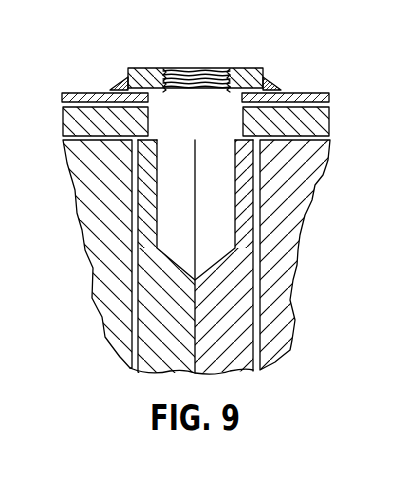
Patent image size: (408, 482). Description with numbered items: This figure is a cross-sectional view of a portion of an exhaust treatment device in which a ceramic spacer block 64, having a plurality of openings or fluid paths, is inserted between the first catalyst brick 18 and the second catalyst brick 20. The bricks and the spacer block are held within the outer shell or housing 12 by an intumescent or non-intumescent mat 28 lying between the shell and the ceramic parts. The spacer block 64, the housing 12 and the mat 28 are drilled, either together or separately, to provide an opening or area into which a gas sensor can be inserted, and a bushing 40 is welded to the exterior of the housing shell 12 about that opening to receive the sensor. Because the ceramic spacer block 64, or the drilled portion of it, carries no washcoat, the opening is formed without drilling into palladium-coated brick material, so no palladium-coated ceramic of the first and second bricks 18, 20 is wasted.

The outer shell 12 is at (92, 98).
The first catalyst brick 18 is at (107, 258).
The second catalyst brick 20 is at (275, 267).
The intumescent or non-intumescent mat 28 is at (87, 118).
The bushing 40 is at (258, 64).
The ceramic spacer block 64 is at (230, 350).